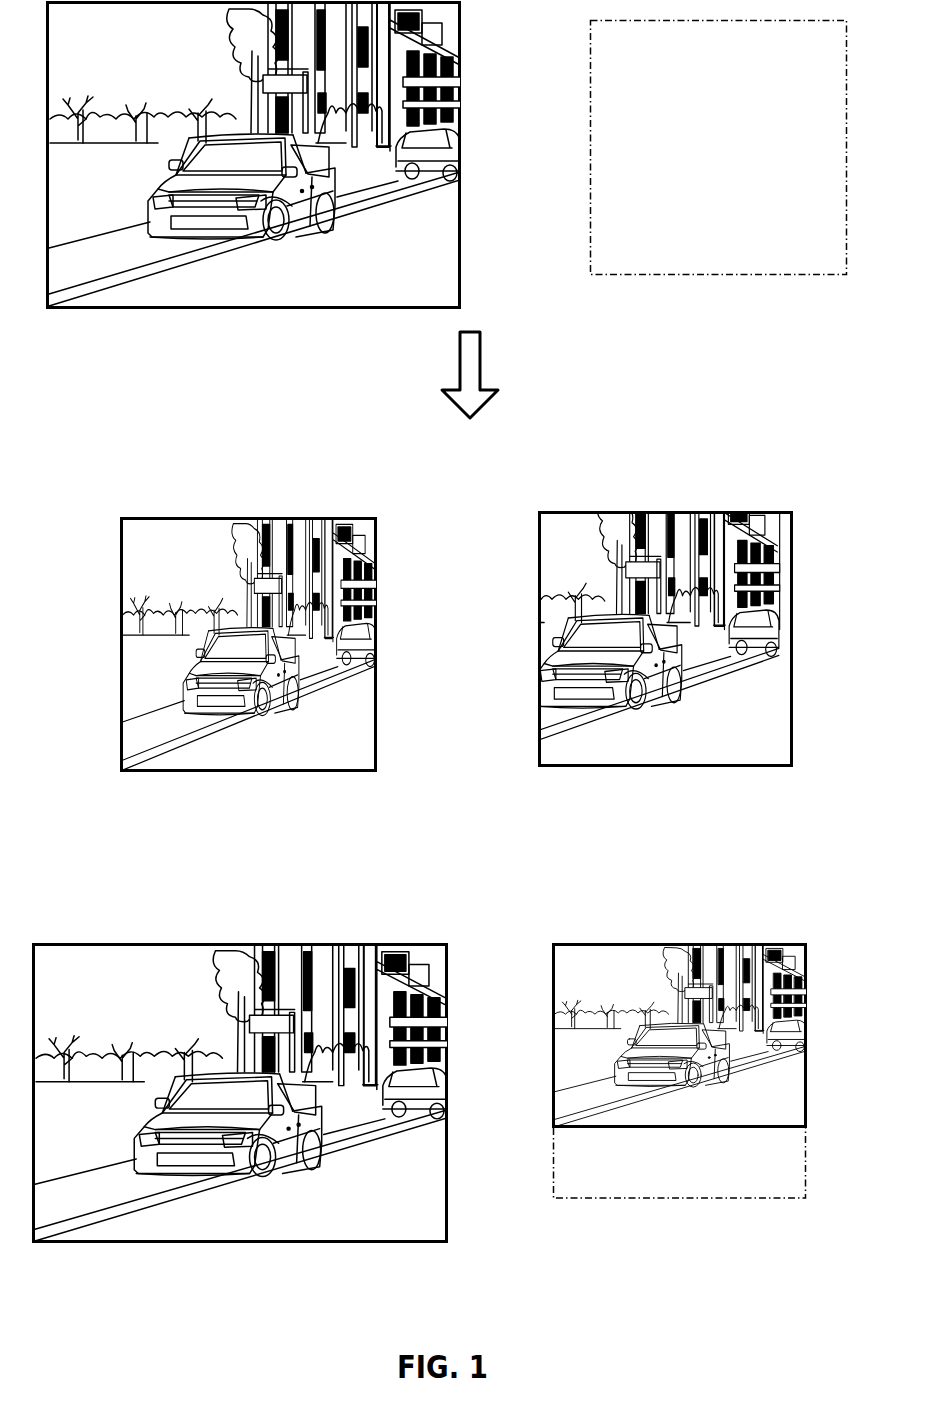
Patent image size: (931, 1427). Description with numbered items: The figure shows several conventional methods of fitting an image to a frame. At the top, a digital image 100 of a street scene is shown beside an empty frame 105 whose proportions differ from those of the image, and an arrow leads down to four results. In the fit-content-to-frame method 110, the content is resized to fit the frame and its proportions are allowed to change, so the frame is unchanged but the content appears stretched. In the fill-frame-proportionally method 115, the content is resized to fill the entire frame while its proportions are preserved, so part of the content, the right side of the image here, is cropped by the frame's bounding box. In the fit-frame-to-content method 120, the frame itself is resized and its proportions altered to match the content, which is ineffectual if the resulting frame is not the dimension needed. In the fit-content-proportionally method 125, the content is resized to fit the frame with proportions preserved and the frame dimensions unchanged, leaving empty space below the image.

The digital image 100 is at (170, 310).
The frame 105 is at (718, 277).
The fit-content-to-frame method 110 is at (257, 773).
The fill-frame-proportionally method 115 is at (672, 768).
The fit-frame-to-content method 120 is at (205, 1243).
The fit-content-proportionally method 125 is at (690, 1199).